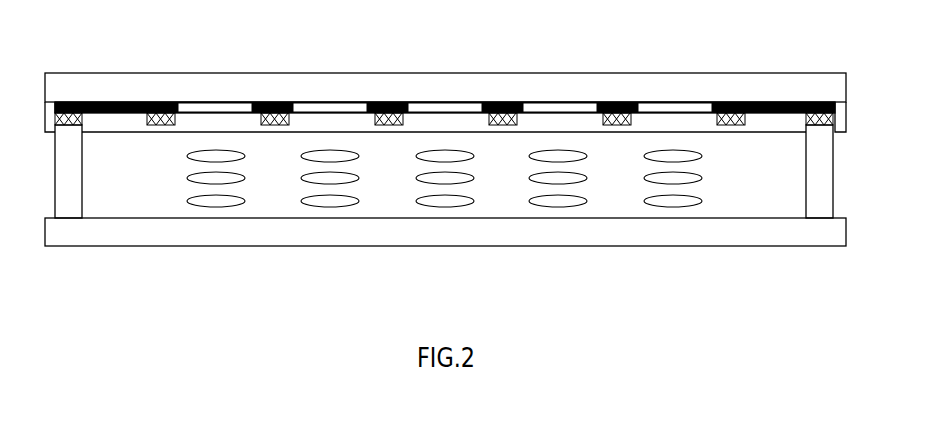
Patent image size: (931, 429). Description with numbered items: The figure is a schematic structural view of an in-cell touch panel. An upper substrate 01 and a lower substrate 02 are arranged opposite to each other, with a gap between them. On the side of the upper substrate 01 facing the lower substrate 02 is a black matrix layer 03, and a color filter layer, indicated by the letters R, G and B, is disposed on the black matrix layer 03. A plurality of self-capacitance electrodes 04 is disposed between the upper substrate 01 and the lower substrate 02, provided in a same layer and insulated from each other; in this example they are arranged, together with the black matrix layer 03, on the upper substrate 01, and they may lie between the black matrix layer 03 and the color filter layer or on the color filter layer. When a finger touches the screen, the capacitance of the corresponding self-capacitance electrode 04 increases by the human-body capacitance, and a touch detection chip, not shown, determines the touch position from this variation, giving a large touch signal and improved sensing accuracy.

The upper substrate 01 is at (445, 67).
The lower substrate 02 is at (445, 264).
The black matrix layer 03 is at (445, 68).
The self-capacitance electrodes 04 is at (444, 75).